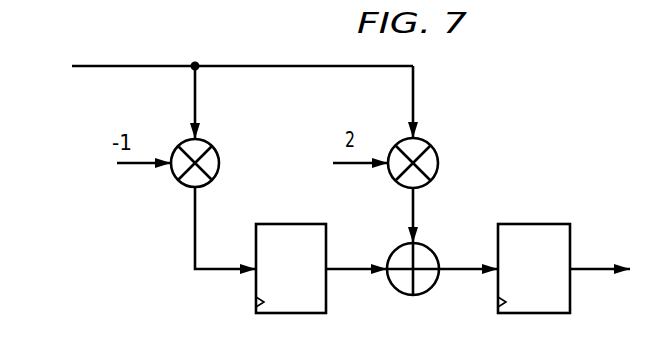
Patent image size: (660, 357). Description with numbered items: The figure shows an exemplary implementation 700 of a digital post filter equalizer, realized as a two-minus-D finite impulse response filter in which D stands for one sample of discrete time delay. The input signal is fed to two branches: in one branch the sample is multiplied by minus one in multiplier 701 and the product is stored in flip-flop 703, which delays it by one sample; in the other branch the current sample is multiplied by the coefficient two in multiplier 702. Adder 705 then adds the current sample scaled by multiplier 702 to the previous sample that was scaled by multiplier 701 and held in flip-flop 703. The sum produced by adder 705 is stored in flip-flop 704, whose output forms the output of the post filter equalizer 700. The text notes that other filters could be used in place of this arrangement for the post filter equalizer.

The post filter equalizer implementation 700 is at (562, 134).
The multiplier 701 is at (220, 157).
The multiplier 702 is at (432, 147).
The flip-flop 703 is at (327, 241).
The flip-flop 704 is at (571, 240).
The adder 705 is at (430, 287).